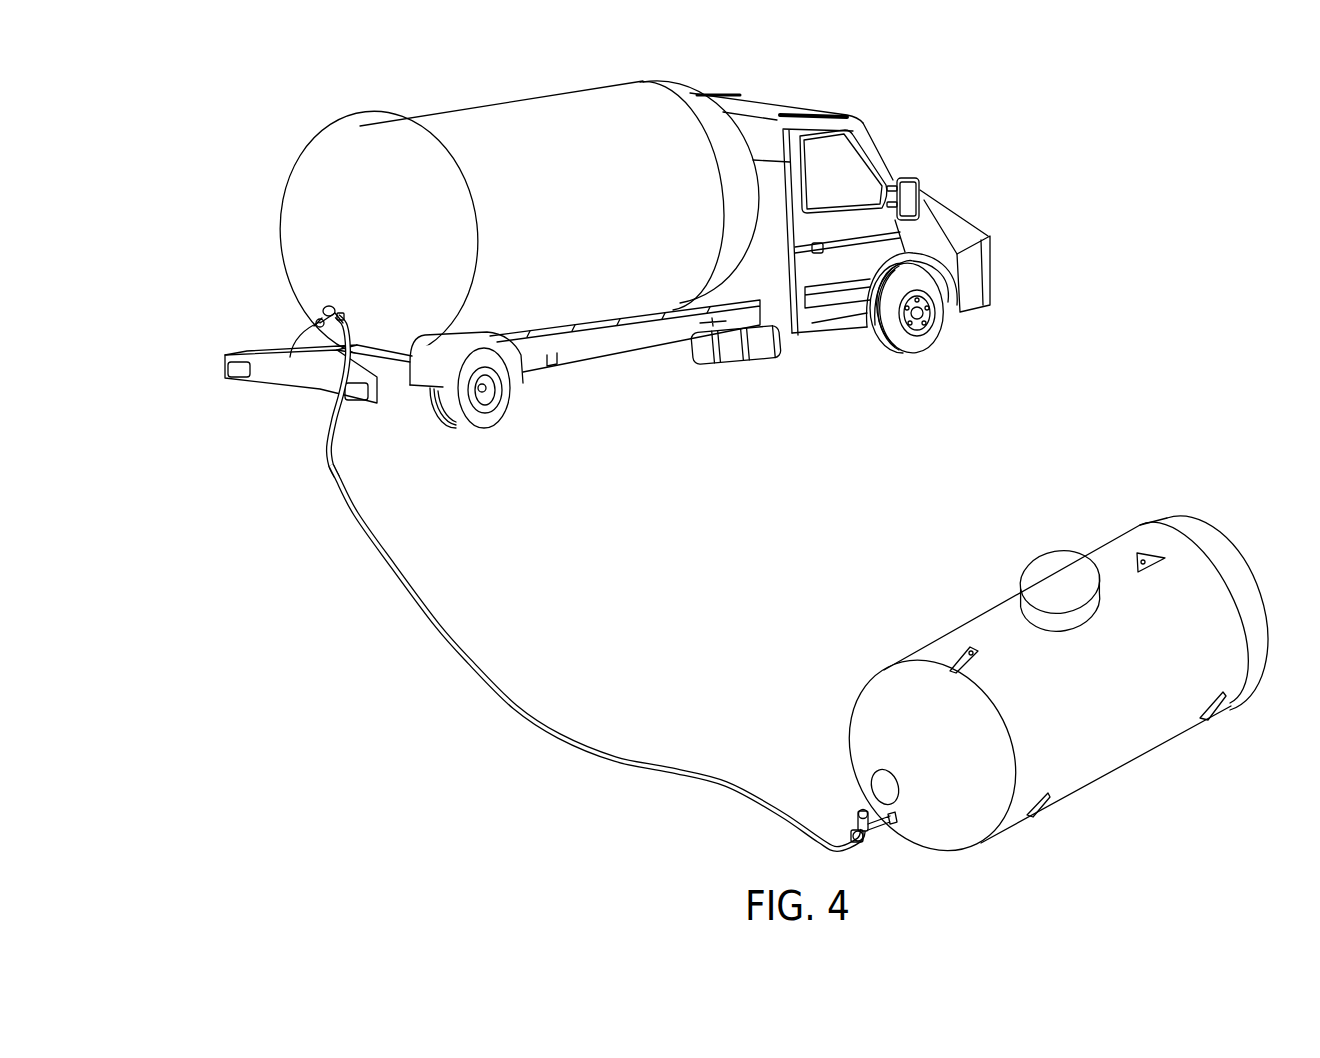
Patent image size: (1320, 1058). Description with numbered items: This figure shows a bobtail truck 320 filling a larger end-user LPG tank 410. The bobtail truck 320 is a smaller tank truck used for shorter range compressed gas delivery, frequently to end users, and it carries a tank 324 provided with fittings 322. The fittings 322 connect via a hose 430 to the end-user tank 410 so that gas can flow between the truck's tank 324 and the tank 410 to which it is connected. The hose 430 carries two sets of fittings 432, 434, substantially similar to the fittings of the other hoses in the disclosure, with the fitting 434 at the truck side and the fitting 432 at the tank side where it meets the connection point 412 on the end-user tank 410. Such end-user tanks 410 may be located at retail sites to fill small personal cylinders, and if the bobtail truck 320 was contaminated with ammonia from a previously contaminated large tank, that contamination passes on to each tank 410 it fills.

The bobtail truck 320 is at (522, 103).
The tank 324 is at (533, 171).
The fittings 322 is at (317, 318).
The fitting 434 is at (349, 333).
The hose 430 is at (468, 658).
The fitting 432 is at (856, 834).
The storage tank fill valve 412 is at (863, 823).
The end-user tank 410 is at (1100, 757).